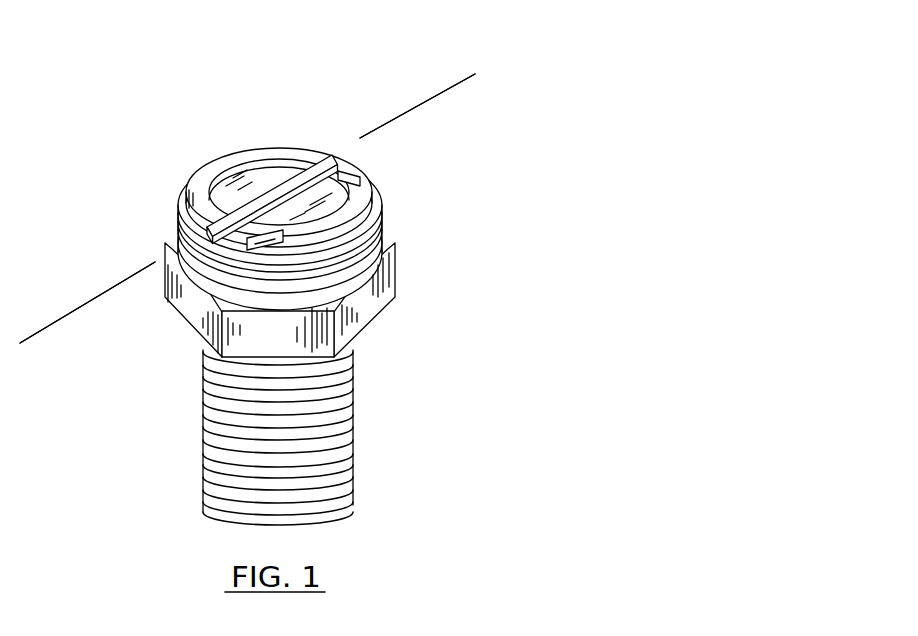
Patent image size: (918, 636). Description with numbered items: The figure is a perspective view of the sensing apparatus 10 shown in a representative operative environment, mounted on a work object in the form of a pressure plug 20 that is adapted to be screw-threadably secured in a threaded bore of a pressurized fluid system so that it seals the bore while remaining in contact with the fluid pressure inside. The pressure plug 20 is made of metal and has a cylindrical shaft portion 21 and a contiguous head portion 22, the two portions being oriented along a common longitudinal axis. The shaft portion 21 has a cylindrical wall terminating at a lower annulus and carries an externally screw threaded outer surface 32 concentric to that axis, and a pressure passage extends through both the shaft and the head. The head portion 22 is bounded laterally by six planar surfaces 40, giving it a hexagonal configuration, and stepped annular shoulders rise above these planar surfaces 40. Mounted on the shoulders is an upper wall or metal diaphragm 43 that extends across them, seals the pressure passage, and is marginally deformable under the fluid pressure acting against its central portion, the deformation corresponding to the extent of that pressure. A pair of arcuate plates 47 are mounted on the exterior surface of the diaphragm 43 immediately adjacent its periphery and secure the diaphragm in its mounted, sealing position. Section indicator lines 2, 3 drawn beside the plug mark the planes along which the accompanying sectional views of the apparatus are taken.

The section line 2- 2 is at (424, 88).
The section line 3- 3 is at (483, 90).
The sensing apparatus 10 is at (302, 305).
The pressure plug 20 is at (413, 259).
The cylindrical shaft portion 21 is at (353, 435).
The head portion 22 is at (384, 238).
The externally screw threaded outer surface 32 is at (207, 443).
The planar surfaces 40 is at (192, 303).
The metal diaphragm 43 is at (348, 183).
The arcuate plates 47 is at (212, 170).